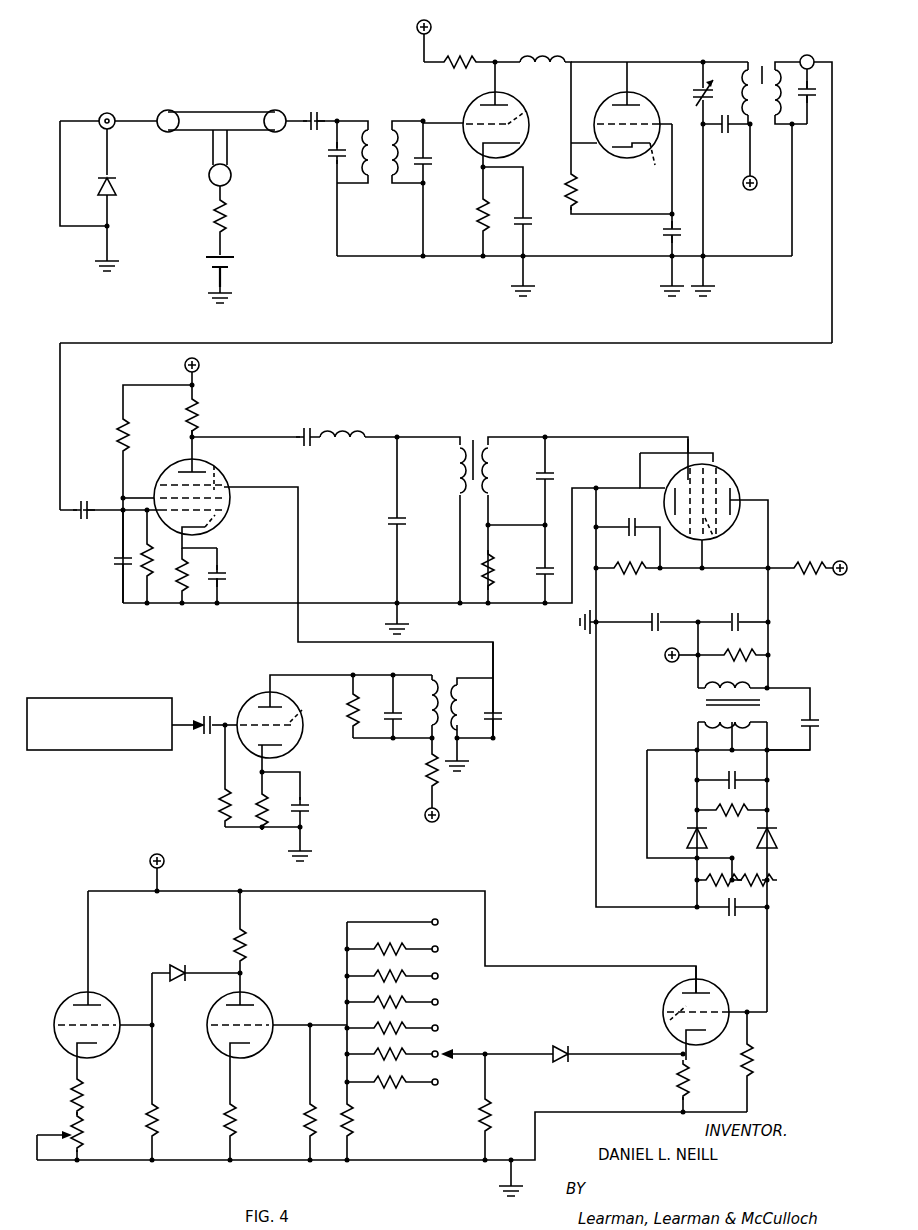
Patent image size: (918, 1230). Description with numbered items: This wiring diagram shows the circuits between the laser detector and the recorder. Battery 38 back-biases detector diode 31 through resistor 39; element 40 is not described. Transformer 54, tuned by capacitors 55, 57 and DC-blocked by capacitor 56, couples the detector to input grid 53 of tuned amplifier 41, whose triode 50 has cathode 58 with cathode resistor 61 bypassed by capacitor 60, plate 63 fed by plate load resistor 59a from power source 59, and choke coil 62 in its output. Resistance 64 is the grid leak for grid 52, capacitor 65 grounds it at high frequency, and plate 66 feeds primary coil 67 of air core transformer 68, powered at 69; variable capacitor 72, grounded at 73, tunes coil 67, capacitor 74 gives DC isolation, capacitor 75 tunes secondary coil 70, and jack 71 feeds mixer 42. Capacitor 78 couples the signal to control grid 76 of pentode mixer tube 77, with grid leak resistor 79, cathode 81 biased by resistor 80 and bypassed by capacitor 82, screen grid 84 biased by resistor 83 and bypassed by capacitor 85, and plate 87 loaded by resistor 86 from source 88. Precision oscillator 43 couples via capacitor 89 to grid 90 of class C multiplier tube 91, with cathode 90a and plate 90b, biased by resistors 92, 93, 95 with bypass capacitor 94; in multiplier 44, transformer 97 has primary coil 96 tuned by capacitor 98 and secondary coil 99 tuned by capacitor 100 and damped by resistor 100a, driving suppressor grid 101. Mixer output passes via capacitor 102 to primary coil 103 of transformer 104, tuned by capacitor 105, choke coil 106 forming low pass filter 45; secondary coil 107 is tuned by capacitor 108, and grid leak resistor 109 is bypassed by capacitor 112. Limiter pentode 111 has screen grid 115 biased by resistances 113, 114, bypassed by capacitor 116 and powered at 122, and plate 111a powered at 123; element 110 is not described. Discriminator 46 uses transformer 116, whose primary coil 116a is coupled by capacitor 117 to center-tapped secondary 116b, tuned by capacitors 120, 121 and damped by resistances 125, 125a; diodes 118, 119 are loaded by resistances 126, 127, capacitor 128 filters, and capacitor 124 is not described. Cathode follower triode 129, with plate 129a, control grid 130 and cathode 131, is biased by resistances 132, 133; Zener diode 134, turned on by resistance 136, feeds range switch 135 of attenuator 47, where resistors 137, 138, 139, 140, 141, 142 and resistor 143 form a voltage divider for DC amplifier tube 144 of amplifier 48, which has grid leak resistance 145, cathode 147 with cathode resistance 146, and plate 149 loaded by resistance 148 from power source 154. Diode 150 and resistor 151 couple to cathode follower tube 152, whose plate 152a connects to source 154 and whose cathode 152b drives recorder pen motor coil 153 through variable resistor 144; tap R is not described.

The antenna/input terminals 40 is at (99, 114).
The detector 31 is at (116, 191).
The battery 38 is at (213, 258).
The resistor 39 is at (228, 212).
The tuned radio-frequency amplifier 41 is at (566, 266).
The triode tube 50 is at (475, 102).
The grid 52 is at (627, 125).
The input grid 53 is at (526, 112).
The transformer 54 is at (381, 129).
The capacitor 55 is at (335, 152).
The capacitor 56 is at (307, 110).
The capacitor 57 is at (428, 152).
The cathode 58 is at (520, 132).
The direct current power source 59 is at (432, 27).
The plate load resistor 59a is at (471, 62).
The capacitor 60 is at (524, 212).
The cathode resistor 61 is at (482, 214).
The choke coil 62 is at (537, 62).
The plate 63 is at (502, 104).
The resistance 64 is at (577, 176).
The capacitor 65 is at (660, 230).
The plate 66 is at (628, 105).
The primary coil 67 is at (744, 94).
The air core transformer 68 is at (762, 68).
The direct current power source 69 is at (748, 192).
The secondary coil 70 is at (776, 114).
The jack 71 is at (809, 60).
The variable capacitor 72 is at (698, 88).
The ground 73 is at (709, 266).
The capacitor 74 is at (722, 128).
The capacitor 75 is at (812, 110).
The pentode mixer 42 is at (276, 436).
The low pass filter 45 is at (376, 434).
The discriminator 46 is at (780, 506).
The control grid 76 is at (240, 526).
The pentode mixer tube 77 is at (230, 500).
The capacitor 78 is at (78, 518).
The resistor 79 is at (152, 556).
The resistor 80 is at (188, 576).
The cathode 81 is at (218, 540).
The capacitor 82 is at (224, 572).
The resistor 83 is at (120, 442).
The screen grid 84 is at (164, 480).
The capacitor 85 is at (120, 566).
The resistor 86 is at (194, 413).
The plate 87 is at (190, 458).
The direct current power source 88 is at (200, 365).
The suppressor grid 101 is at (218, 470).
The capacitor 102 is at (301, 434).
The primary coil 103 is at (461, 485).
The transformer 104 is at (478, 438).
The capacitor 105 is at (396, 507).
The choke coil 106 is at (352, 444).
The secondary coil 107 is at (490, 486).
The capacitor 108 is at (552, 465).
The grid leak resistor 109 is at (489, 576).
The tube electrode 110 is at (686, 490).
The pentode tube 111 is at (726, 486).
The plate 111a is at (756, 500).
The capacitor 112 is at (540, 566).
The resistance 113 is at (618, 572).
The resistance 114 is at (806, 572).
The screen grid 115 is at (712, 540).
The transformer 116 is at (638, 532).
The primary coil 116a is at (760, 690).
The center tapped secondary 116b is at (764, 722).
The capacitor 117 is at (808, 712).
The diode 118 is at (774, 834).
The diode 119 is at (688, 836).
The capacitor 120 is at (720, 622).
The capacitor 121 is at (732, 788).
The direct current power source 122 is at (840, 566).
The direct current power source 123 is at (666, 656).
The capacitor 124 is at (656, 618).
The damping resistance 125 is at (734, 814).
The damping resistance 125a is at (762, 656).
The resistance 126 is at (698, 880).
The resistance 127 is at (767, 886).
The capacitor 128 is at (726, 910).
The precision oscillator 43 is at (100, 696).
The class C frequency multiplier 44 is at (326, 802).
The capacitor 89 is at (200, 718).
The grid 90 is at (304, 704).
The cathode 90a is at (284, 752).
The plate 90b is at (284, 696).
The class C multiplier tube 91 is at (248, 698).
The resistor 92 is at (220, 794).
The cathode resistor 93 is at (260, 794).
The capacitor 94 is at (310, 795).
The resistor 95 is at (428, 768).
The primary coil 96 is at (426, 680).
The transformer 97 is at (442, 684).
The capacitor 98 is at (392, 702).
The secondary coil 99 is at (493, 690).
The capacitor 100 is at (500, 720).
The resistor 100a is at (348, 722).
The range control attenuator 47 is at (488, 1028).
The low frequency amplifier 48 is at (252, 972).
The cathode follower triode 129 is at (662, 996).
The plate 129a is at (698, 988).
The control grid 130 is at (662, 1020).
The cathode 131 is at (690, 1055).
The resistance 132 is at (755, 1062).
The cathode resistor 133 is at (670, 1082).
The Zener diode 134 is at (564, 1050).
The range switch 135 is at (468, 1057).
The resistance 136 is at (484, 1114).
The resistor 137 is at (418, 950).
The resistor 138 is at (418, 977).
The resistor 139 is at (418, 1003).
The resistor 140 is at (418, 1029).
The resistor 141 is at (418, 1055).
The resistor 142 is at (402, 1086).
The resistor 143 is at (358, 1120).
The DC amplifier tube 144 is at (80, 1134).
The resistance 145 is at (308, 1110).
The cathode resistance 146 is at (242, 1126).
The cathode 147 is at (216, 1022).
The resistance 148 is at (234, 944).
The plate 149 is at (254, 994).
The Zener diode 150 is at (172, 970).
The resistor 151 is at (152, 1126).
The cathode follower tube 152 is at (54, 1026).
The plate 152a is at (74, 1006).
The cathode 152b is at (78, 1036).
The coil 153 is at (80, 1079).
The power source 154 is at (151, 860).
The adjustable tap R is at (60, 1084).